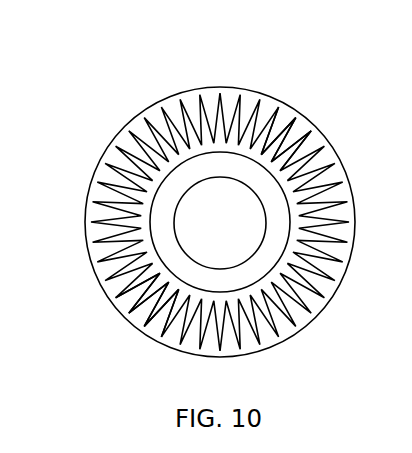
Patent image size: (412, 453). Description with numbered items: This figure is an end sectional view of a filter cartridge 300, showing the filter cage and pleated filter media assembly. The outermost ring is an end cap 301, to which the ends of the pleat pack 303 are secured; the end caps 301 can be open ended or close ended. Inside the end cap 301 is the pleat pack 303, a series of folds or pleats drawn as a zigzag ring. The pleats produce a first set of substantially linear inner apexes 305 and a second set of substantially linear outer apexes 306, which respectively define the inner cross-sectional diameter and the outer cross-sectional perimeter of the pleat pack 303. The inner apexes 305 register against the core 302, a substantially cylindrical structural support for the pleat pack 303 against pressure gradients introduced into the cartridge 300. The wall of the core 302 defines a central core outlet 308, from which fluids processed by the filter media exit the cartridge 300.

The filter cartridge 300 is at (232, 212).
The end caps 301 is at (115, 135).
The core 302 is at (282, 240).
The pleat pack 303 is at (325, 159).
The inner apexes 305 is at (166, 287).
The outer apexes 306 is at (279, 108).
The core outlet 308 is at (233, 233).